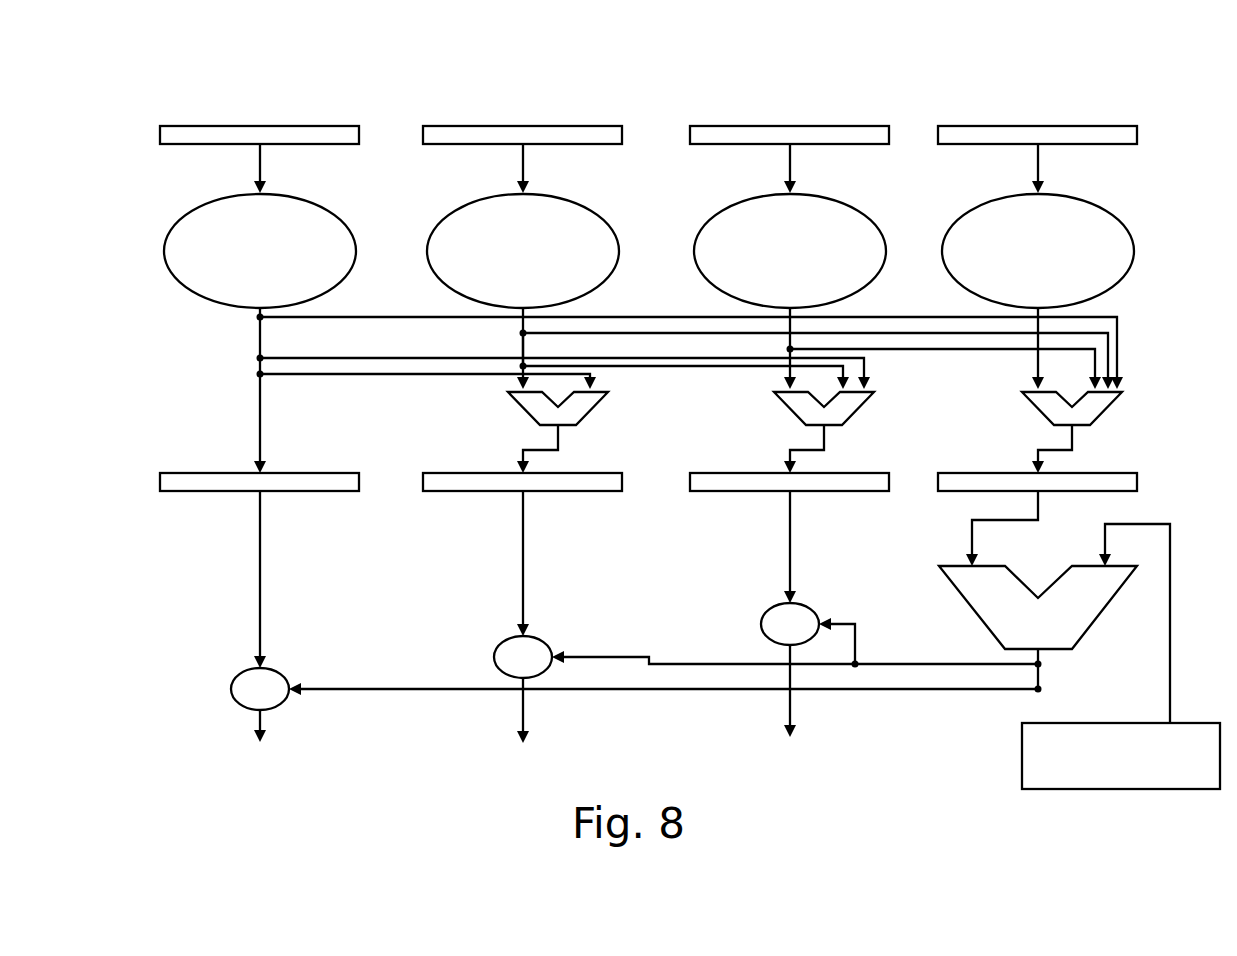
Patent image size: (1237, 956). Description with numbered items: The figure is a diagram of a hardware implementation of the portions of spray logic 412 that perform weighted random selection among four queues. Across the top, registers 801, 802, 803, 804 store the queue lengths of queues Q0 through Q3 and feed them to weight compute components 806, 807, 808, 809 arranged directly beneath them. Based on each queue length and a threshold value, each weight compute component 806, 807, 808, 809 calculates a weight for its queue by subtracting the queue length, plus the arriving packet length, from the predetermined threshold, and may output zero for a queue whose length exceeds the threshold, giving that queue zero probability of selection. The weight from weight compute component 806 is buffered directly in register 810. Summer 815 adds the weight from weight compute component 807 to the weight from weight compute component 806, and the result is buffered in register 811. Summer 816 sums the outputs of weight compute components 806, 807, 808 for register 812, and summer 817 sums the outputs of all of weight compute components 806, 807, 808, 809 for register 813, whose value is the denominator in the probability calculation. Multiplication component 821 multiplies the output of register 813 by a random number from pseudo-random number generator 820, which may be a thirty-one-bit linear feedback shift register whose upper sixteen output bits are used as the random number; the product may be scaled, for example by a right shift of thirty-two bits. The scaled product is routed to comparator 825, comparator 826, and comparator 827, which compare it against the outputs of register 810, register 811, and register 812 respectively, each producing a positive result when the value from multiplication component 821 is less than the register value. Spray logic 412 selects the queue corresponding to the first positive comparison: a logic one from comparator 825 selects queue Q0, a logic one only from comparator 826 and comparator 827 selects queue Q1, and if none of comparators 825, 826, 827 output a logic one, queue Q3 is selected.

The spray logic 412 is at (130, 75).
The register 801 is at (358, 126).
The register 802 is at (621, 126).
The register 803 is at (888, 126).
The register 804 is at (1136, 126).
The weight compute component 806 is at (333, 208).
The weight compute component 807 is at (596, 208).
The weight compute component 808 is at (863, 208).
The weight compute component 809 is at (1113, 208).
The register 810 is at (356, 473).
The register 811 is at (624, 473).
The register 812 is at (889, 473).
The register 813 is at (1142, 473).
The summer 815 is at (600, 400).
The summer 816 is at (862, 400).
The summer 817 is at (1112, 400).
The pseudo-random number generator 820 is at (1100, 723).
The multiplication component 821 is at (1090, 638).
The comparator 825 is at (280, 670).
The comparator 826 is at (548, 638).
The comparator 827 is at (815, 605).